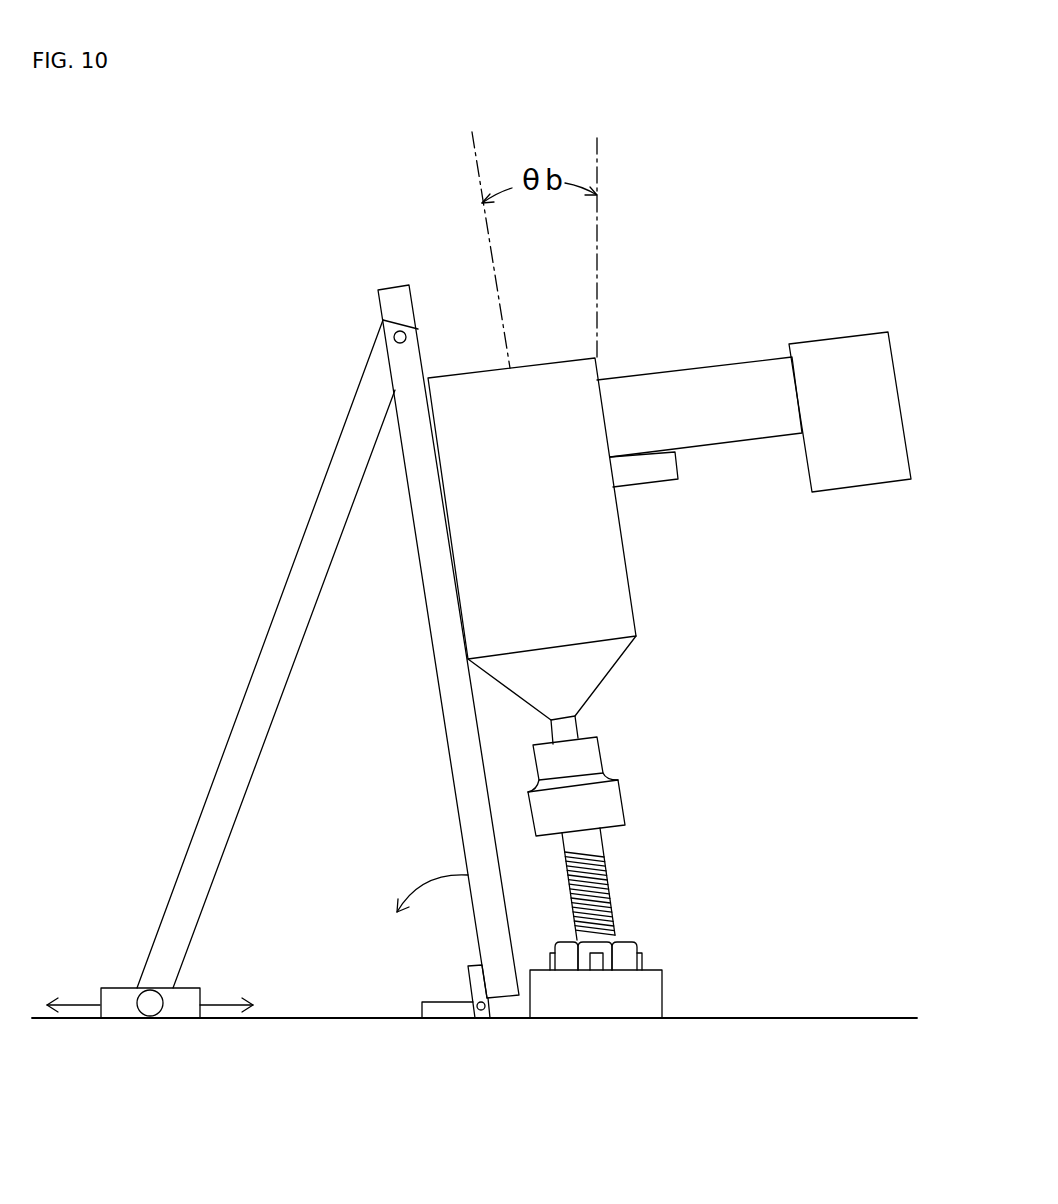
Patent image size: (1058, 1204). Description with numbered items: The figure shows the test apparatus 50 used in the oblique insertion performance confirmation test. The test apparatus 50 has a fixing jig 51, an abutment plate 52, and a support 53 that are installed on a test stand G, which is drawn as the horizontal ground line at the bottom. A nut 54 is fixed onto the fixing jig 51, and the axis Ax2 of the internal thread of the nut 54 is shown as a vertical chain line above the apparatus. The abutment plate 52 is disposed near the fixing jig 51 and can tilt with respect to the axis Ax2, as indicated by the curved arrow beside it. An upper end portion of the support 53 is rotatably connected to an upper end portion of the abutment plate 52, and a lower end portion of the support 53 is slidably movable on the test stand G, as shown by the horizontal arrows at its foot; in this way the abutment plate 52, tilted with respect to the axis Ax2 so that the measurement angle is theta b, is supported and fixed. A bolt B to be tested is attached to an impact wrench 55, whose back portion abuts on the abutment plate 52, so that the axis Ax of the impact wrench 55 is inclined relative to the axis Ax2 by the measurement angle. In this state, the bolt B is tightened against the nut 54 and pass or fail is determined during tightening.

The test apparatus 50 is at (262, 420).
The fixing jig 51 is at (648, 988).
The abutment plate 52 is at (450, 705).
The support 53 is at (253, 753).
The nut 54 is at (628, 943).
The impact wrench 55 is at (612, 580).
The bolt B is at (600, 852).
The test stand G is at (793, 1017).
The axis of nut runner Ax is at (486, 235).
The axis of the internal thread of the nut Ax2 is at (595, 231).